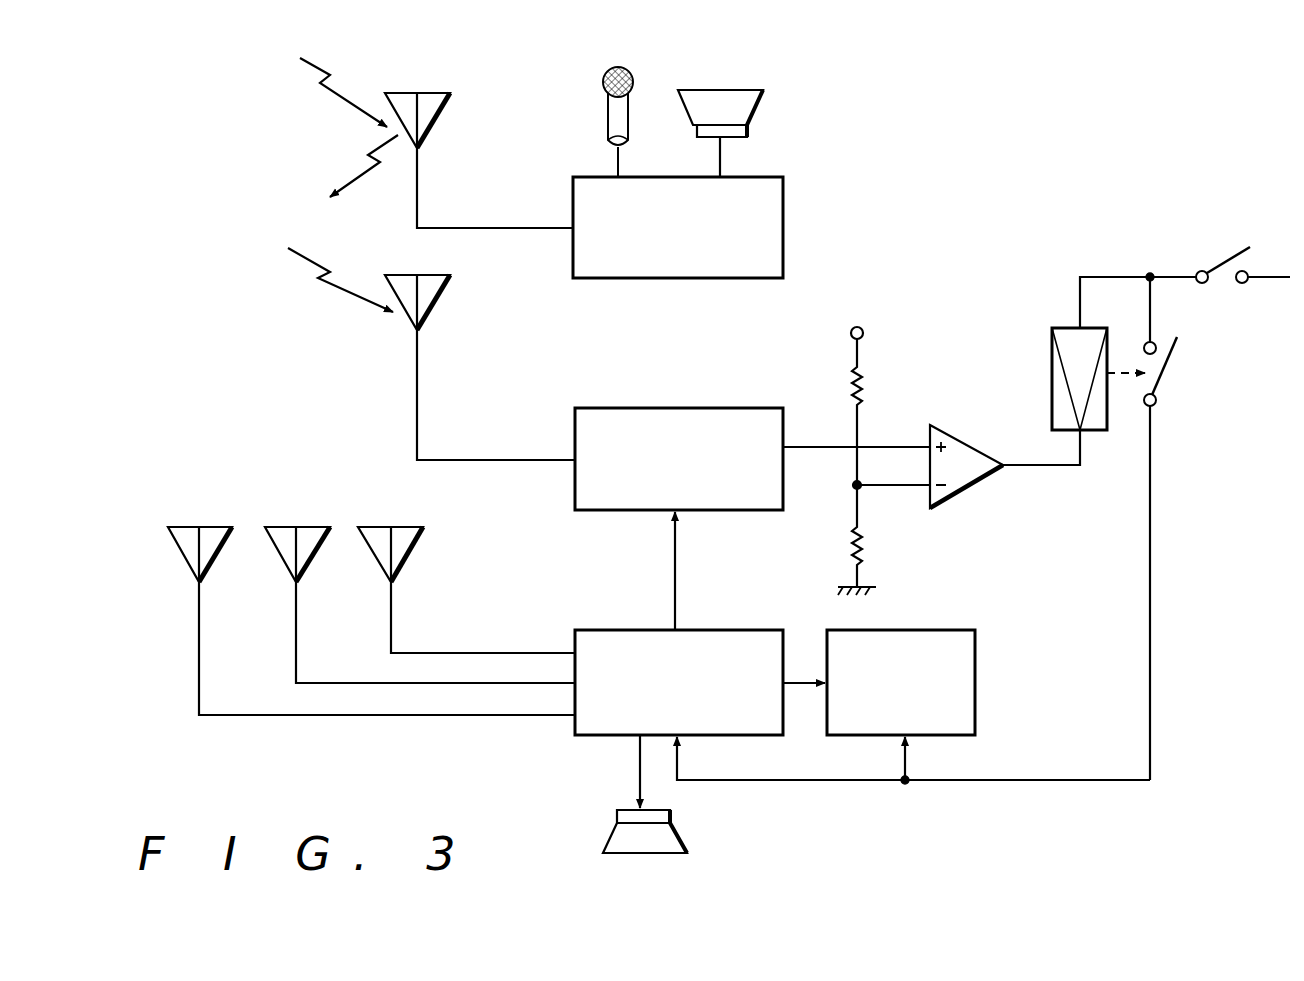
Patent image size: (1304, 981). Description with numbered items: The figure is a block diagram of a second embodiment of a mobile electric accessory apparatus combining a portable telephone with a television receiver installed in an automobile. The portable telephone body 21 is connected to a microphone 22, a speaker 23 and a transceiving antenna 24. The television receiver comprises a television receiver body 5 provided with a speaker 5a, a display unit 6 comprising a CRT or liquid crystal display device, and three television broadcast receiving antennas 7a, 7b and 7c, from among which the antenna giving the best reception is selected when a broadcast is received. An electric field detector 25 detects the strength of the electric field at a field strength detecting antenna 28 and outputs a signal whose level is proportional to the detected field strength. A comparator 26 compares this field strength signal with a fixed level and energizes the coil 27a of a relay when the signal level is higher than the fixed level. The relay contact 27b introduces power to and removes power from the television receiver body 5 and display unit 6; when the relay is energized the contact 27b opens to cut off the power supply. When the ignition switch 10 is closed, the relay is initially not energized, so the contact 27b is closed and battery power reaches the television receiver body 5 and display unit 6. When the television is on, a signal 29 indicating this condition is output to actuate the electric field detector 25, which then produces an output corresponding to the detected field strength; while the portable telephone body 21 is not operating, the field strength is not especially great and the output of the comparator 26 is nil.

The television receiver body 5 is at (592, 737).
The speaker 5a is at (685, 842).
The display unit 6 is at (977, 660).
The television broadcast receiving antenna 7a is at (199, 626).
The television broadcast receiving antenna 7b is at (296, 632).
The television broadcast receiving antenna 7c is at (391, 620).
The ignition switch 10 is at (1222, 258).
The portable telephone body 21 is at (637, 278).
The microphone 22 is at (605, 97).
The speaker 23 is at (758, 107).
The transceiving antenna 24 is at (423, 180).
The electric field detector 25 is at (712, 408).
The comparator 26 is at (965, 492).
The coil 27a is at (1052, 354).
The contact 27b is at (1172, 378).
The field strength detecting antenna 28 is at (417, 373).
The signal indicating that the television is on 29 is at (675, 553).